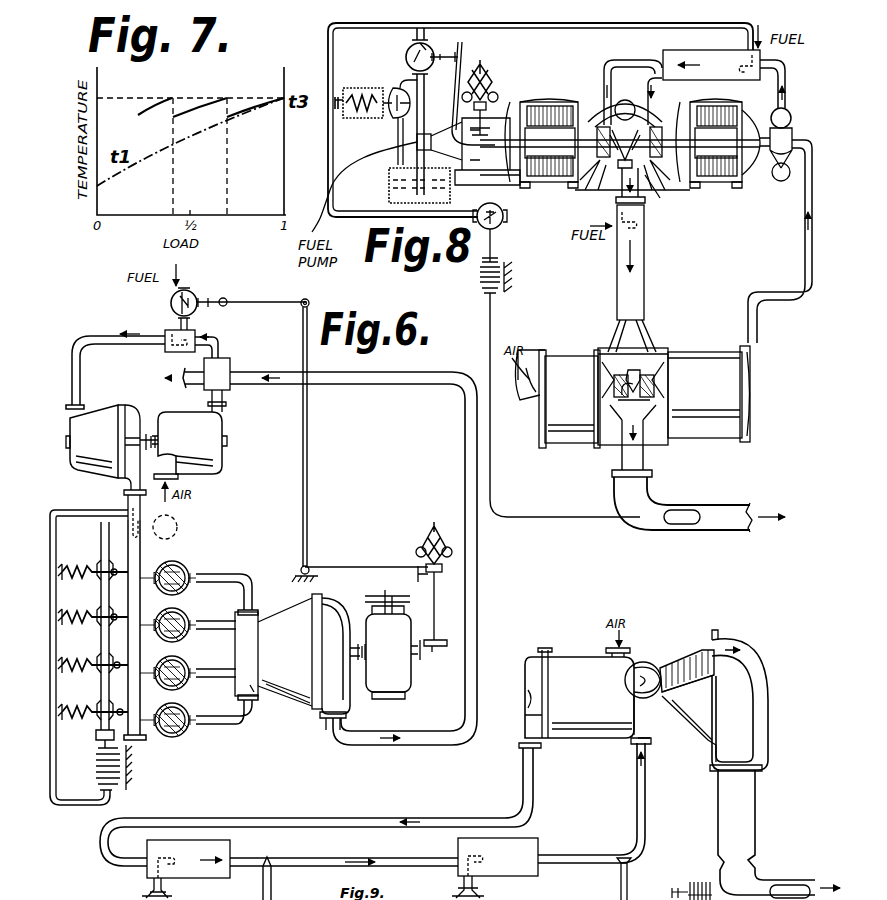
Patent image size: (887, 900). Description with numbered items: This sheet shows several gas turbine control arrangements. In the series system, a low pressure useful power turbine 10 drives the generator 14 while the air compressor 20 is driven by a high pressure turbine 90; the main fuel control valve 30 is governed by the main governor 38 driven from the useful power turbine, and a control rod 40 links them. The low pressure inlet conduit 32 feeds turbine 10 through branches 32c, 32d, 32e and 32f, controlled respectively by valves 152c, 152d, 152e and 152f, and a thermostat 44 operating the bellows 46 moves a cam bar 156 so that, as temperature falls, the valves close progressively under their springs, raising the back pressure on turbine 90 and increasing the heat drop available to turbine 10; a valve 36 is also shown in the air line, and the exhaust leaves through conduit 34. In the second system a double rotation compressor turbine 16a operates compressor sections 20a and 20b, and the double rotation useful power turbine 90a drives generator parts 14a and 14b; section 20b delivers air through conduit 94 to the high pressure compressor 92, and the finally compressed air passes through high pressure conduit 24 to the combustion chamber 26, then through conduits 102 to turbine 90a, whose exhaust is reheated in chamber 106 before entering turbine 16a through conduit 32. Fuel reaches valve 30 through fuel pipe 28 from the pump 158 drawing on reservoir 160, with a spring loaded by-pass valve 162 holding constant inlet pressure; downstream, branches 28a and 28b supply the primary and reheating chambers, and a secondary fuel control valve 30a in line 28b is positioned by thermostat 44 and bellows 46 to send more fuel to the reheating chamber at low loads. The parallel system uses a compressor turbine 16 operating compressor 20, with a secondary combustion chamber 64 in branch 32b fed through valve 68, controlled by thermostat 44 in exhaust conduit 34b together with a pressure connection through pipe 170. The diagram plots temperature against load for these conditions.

In FIG. 6, the low pressure useful power turbine 10 is at (296, 690).
In FIG. 6, the generator 14 is at (404, 680).
In FIG. 8, the generator part 14a is at (712, 106).
In FIG. 8, the generator part 14b is at (556, 106).
In FIG. 9, the low pressure compressor turbine 16 is at (685, 628).
In FIG. 8, the compressor turbine 16a is at (628, 345).
In FIG. 6, the air compressor 20 is at (212, 432).
In FIG. 9, the air compressor 20 is at (566, 664).
In FIG. 8, the compressor section 20a is at (580, 440).
In FIG. 8, the compressor section 20b is at (712, 428).
In FIG. 8, the high pressure conduit 24 is at (786, 75).
In FIG. 9, the high pressure conduit 24 is at (326, 818).
In FIG. 8, the primary combustion chamber 26 is at (700, 56).
In FIG. 9, the primary combustion chamber 26 is at (204, 878).
In FIG. 8, the fuel pipe 28 is at (424, 104).
In FIG. 8, the fuel supply branch 28a is at (528, 25).
In FIG. 8, the fuel supply line branch 28b is at (329, 45).
In FIG. 8, the main fuel control valve 30 is at (434, 48).
In FIG. 6, the main fuel control valve 30 is at (196, 294).
In FIG. 9, the main fuel control valve 30 is at (152, 896).
In FIG. 8, the secondary fuel control valve 30a is at (503, 226).
In FIG. 8, the low pressure inlet conduit 32 is at (622, 314).
In FIG. 6, the low pressure inlet conduit 32 is at (140, 548).
In FIG. 9, the low pressure inlet conduit 32 is at (248, 867).
In FIG. 9, the inlet conduit branch 32b is at (648, 790).
In FIG. 6, the branch 32c is at (244, 572).
In FIG. 6, the branch 32d is at (228, 636).
In FIG. 6, the branch 32e is at (222, 668).
In FIG. 6, the branch 32f is at (236, 732).
In FIG. 8, the exhaust conduit 34 is at (740, 530).
In FIG. 6, the exhaust conduit 34 is at (465, 456).
In FIG. 9, the exhaust conduit 34b is at (775, 830).
In FIG. 6, the valve 36 is at (230, 365).
In FIG. 8, the main governor 38 is at (494, 70).
In FIG. 6, the main governor 38 is at (422, 534).
In FIG. 6, the control rod 40 is at (308, 440).
In FIG. 8, the thermostat 44 is at (690, 524).
In FIG. 6, the thermostat 44 is at (140, 530).
In FIG. 9, the thermostat 44 is at (792, 885).
In FIG. 8, the bellows 46 is at (480, 278).
In FIG. 6, the bellows 46 is at (96, 768).
In FIG. 9, the bellows 46 is at (700, 880).
In FIG. 9, the secondary combustion chamber 64 is at (530, 868).
In FIG. 9, the valve 68 is at (480, 892).
In FIG. 6, the high pressure turbine 90 is at (104, 412).
In FIG. 8, the useful power turbine 90a is at (667, 195).
In FIG. 8, the high pressure compressor 92 is at (792, 120).
In FIG. 8, the conduit 94 is at (805, 208).
In FIG. 8, the conduits 102 is at (624, 70).
In FIG. 8, the reheating combustion chamber 106 is at (645, 257).
In FIG. 6, the valve 152c is at (180, 566).
In FIG. 6, the valve 152d is at (180, 613).
In FIG. 6, the valve 152e is at (180, 661).
In FIG. 6, the valve 152f is at (180, 708).
In FIG. 6, the cam bar 156 is at (104, 638).
In FIG. 8, the pump 158 is at (387, 177).
In FIG. 8, the reservoir 160 is at (389, 191).
In FIG. 8, the spring loaded by-pass valve 162 is at (388, 94).
In FIG. 9, the pipe 170 is at (635, 884).